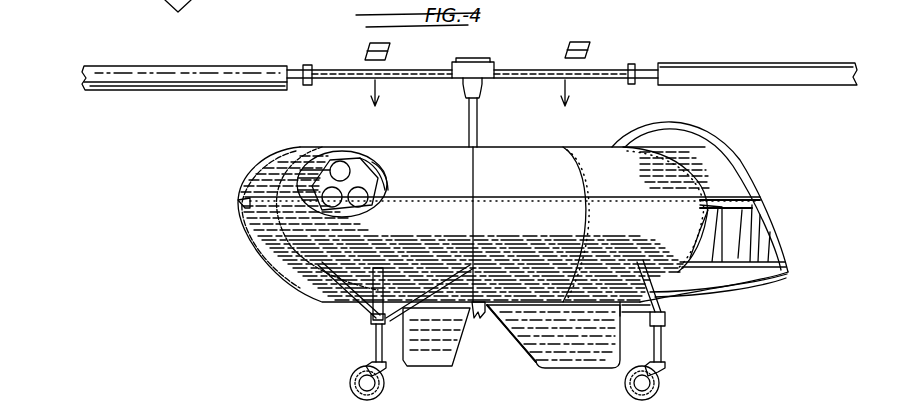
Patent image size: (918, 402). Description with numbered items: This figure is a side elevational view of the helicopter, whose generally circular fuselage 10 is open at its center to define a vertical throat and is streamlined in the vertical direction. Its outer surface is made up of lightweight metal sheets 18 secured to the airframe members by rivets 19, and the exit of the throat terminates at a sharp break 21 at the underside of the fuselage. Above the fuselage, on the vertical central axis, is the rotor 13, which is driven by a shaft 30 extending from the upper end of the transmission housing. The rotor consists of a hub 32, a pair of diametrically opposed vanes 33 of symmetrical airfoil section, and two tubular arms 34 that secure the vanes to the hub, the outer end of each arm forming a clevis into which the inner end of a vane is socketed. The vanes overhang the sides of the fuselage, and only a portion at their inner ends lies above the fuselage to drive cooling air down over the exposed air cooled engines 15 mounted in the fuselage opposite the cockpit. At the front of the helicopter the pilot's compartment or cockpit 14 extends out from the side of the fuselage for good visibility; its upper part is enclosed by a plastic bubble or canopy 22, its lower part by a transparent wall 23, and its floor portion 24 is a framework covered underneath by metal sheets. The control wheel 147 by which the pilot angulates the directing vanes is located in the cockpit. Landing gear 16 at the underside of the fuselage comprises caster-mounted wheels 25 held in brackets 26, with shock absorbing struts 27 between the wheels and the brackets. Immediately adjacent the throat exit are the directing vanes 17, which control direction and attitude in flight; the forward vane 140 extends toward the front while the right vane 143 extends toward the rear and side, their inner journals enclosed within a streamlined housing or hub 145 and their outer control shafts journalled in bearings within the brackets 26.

The fuselage 10 is at (264, 261).
The rotor 13 is at (617, 61).
The pilot's compartment or cockpit 14 is at (746, 162).
The air cooled aircraft engine 15 is at (380, 153).
The landing gear 16 is at (670, 344).
The directing vanes 17 is at (534, 362).
The lightweight metal sheets 18 is at (252, 178).
The rivets 19 is at (252, 206).
The sharp break 21 is at (336, 292).
The plastic bubble or canopy 22 is at (707, 150).
The transparent wall 23 is at (772, 246).
The floor portion 24 is at (768, 275).
The caster-mounted wheels 25 is at (352, 382).
The brackets 26 is at (372, 320).
The shock absorbing struts 27 is at (664, 355).
The shaft 30 is at (480, 124).
The hub 32 is at (493, 57).
The vanes 33 is at (130, 84).
The tubular arms 34 is at (334, 72).
The control vane 140 is at (572, 362).
The right control vane 143 is at (434, 356).
The streamlined housing or hub 145 is at (484, 318).
The control wheel 147 is at (749, 203).